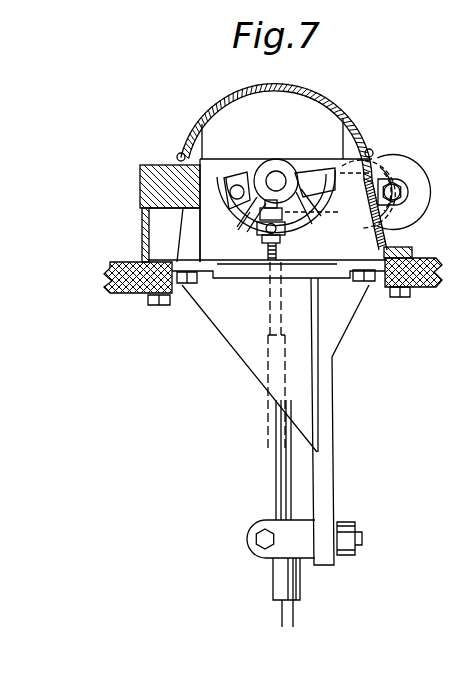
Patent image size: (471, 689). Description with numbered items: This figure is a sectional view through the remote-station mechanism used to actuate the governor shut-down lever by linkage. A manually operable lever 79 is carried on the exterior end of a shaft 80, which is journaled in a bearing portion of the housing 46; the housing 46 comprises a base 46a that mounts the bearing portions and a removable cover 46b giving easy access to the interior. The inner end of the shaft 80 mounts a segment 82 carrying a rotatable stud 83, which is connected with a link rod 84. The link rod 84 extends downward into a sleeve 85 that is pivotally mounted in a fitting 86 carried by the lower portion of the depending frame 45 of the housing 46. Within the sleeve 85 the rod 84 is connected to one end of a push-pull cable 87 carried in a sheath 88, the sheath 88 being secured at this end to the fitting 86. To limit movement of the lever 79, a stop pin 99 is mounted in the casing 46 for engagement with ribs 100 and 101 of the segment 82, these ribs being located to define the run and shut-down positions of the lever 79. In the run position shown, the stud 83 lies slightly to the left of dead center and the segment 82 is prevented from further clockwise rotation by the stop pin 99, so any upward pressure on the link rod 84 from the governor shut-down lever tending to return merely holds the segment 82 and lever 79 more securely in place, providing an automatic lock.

The depending frame 45 is at (333, 400).
The housing 46 is at (166, 136).
The base 46a is at (392, 241).
The removable cover 46b is at (340, 112).
The manually operable lever 79 is at (348, 209).
The shaft 80 is at (275, 179).
The segment 82 is at (268, 236).
The rotatable stud 83 is at (290, 212).
The link rod 84 is at (280, 244).
The sleeve 85 is at (276, 462).
The fitting 86 is at (263, 556).
The push-pull cable 87 is at (288, 613).
The sheath 88 is at (280, 584).
The stop pin 99 is at (237, 184).
The rib 100 is at (252, 214).
The rib 101 is at (320, 214).